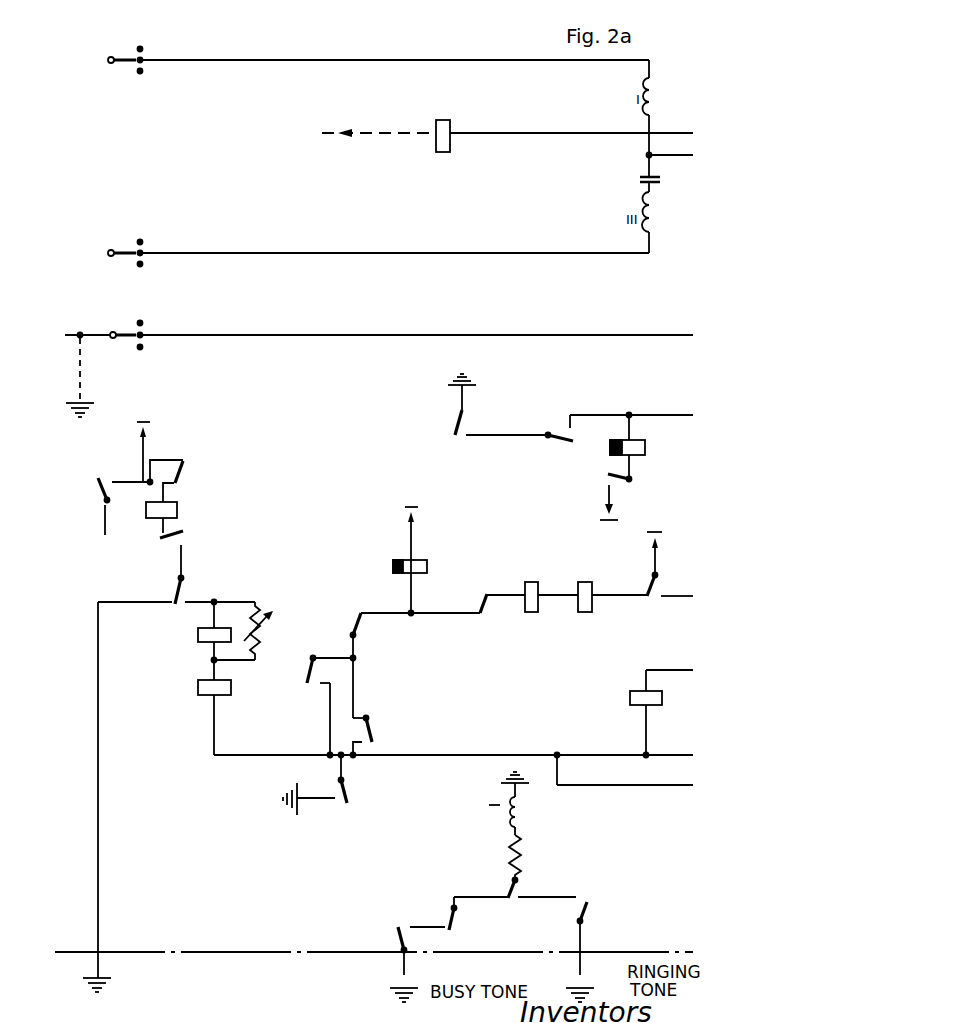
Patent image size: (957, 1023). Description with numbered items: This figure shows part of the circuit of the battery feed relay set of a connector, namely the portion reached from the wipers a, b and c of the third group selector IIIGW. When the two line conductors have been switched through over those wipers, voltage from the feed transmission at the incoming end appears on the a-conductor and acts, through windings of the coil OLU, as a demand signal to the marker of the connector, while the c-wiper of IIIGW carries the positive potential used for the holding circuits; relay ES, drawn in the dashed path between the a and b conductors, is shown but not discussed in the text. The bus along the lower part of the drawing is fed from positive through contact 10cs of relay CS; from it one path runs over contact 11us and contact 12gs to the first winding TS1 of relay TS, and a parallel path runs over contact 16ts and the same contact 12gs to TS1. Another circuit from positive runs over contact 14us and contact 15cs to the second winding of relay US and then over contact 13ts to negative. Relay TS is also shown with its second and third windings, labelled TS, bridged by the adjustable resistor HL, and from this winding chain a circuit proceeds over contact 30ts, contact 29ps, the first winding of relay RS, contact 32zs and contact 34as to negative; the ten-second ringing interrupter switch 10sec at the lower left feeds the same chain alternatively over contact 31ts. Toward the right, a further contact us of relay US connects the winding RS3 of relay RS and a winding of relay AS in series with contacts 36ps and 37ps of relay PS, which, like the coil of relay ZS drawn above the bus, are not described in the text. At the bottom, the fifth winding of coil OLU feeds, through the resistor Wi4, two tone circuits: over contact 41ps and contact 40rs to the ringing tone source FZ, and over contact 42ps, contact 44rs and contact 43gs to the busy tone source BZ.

The third group selector IIIGW is at (104, 196).
The relay ES is at (507, 125).
The contact of relay US 14us is at (498, 404).
The contact of relay CS 15cs is at (612, 426).
The relay US is at (634, 446).
The contact of relay TS 13ts is at (604, 496).
The contact of relay AS 34as is at (149, 453).
The contact of relay ZS 32zs is at (193, 481).
The relay RS is at (167, 517).
The contact of relay PS 29ps is at (192, 554).
The contact of relay TS 31ts is at (141, 590).
The contact of relay TS 30ts is at (220, 594).
The relay TS is at (215, 678).
The variable resistor HL is at (263, 631).
The contact of relay US 11us is at (311, 706).
The contact of relay GS 12gs is at (416, 665).
The winding I of relay TS TS1 is at (416, 561).
The contact us of relay US us is at (490, 600).
The relay RS winding III RS3 is at (549, 595).
The relay AS is at (610, 595).
The contact 36ps of relay PS 36ps is at (636, 564).
The contact 37ps of relay PS 37ps is at (664, 607).
The relay ZS is at (650, 712).
The contact of relay TS 16ts is at (381, 736).
The contact of relay CS 10cs is at (335, 785).
The coil OLU is at (520, 803).
The resistor Wi4 is at (531, 857).
The contact of relay PS 42ps is at (486, 887).
The contact of relay PS 41ps is at (547, 888).
The contact of relay RS 44rs is at (452, 914).
The contact of relay GS 43gs is at (383, 940).
The contact of relay RS 40rs is at (602, 938).
The ten-second ringing interrupter switch 10sec is at (374, 972).
The busy tone source BZ is at (412, 976).
The ringing tone source FZ is at (587, 982).